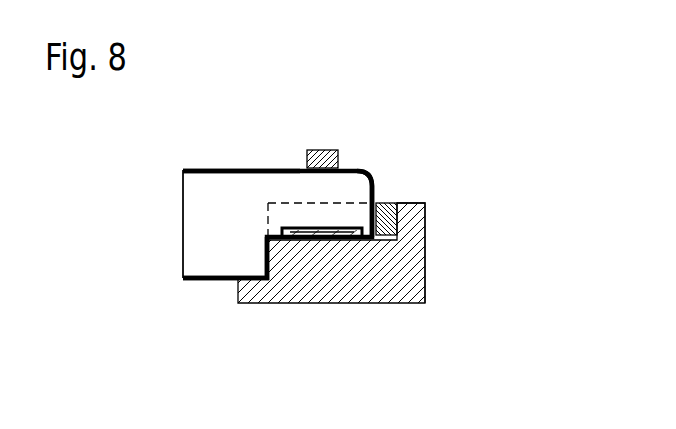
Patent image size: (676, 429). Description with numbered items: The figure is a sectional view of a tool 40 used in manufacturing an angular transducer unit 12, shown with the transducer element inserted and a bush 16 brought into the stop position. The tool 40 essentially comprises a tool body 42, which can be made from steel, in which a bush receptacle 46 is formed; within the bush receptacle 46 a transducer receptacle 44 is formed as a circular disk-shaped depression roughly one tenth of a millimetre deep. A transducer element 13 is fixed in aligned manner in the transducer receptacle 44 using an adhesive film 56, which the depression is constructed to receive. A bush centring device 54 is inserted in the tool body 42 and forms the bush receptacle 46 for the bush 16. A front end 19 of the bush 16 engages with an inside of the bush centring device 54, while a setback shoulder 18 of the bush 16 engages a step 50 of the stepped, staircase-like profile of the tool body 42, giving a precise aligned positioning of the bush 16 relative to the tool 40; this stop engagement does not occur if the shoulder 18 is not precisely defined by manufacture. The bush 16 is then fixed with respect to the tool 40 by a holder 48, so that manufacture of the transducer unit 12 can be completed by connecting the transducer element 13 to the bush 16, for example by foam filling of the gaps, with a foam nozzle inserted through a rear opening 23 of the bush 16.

The angular transducer unit 12 is at (207, 162).
The transducer element 13 is at (306, 230).
The bush 16 is at (197, 170).
The setback shoulder 18 is at (266, 250).
The front end 19 is at (375, 200).
The rear opening 23 is at (183, 226).
The tool 40 is at (410, 200).
The tool body 42 is at (415, 275).
The transducer receptacle 44 is at (345, 242).
The bush receptacle 46 is at (279, 212).
The holder 48 is at (334, 150).
The step 50 is at (278, 258).
The bush centring device 54 is at (386, 223).
The adhesive film 56 is at (318, 245).